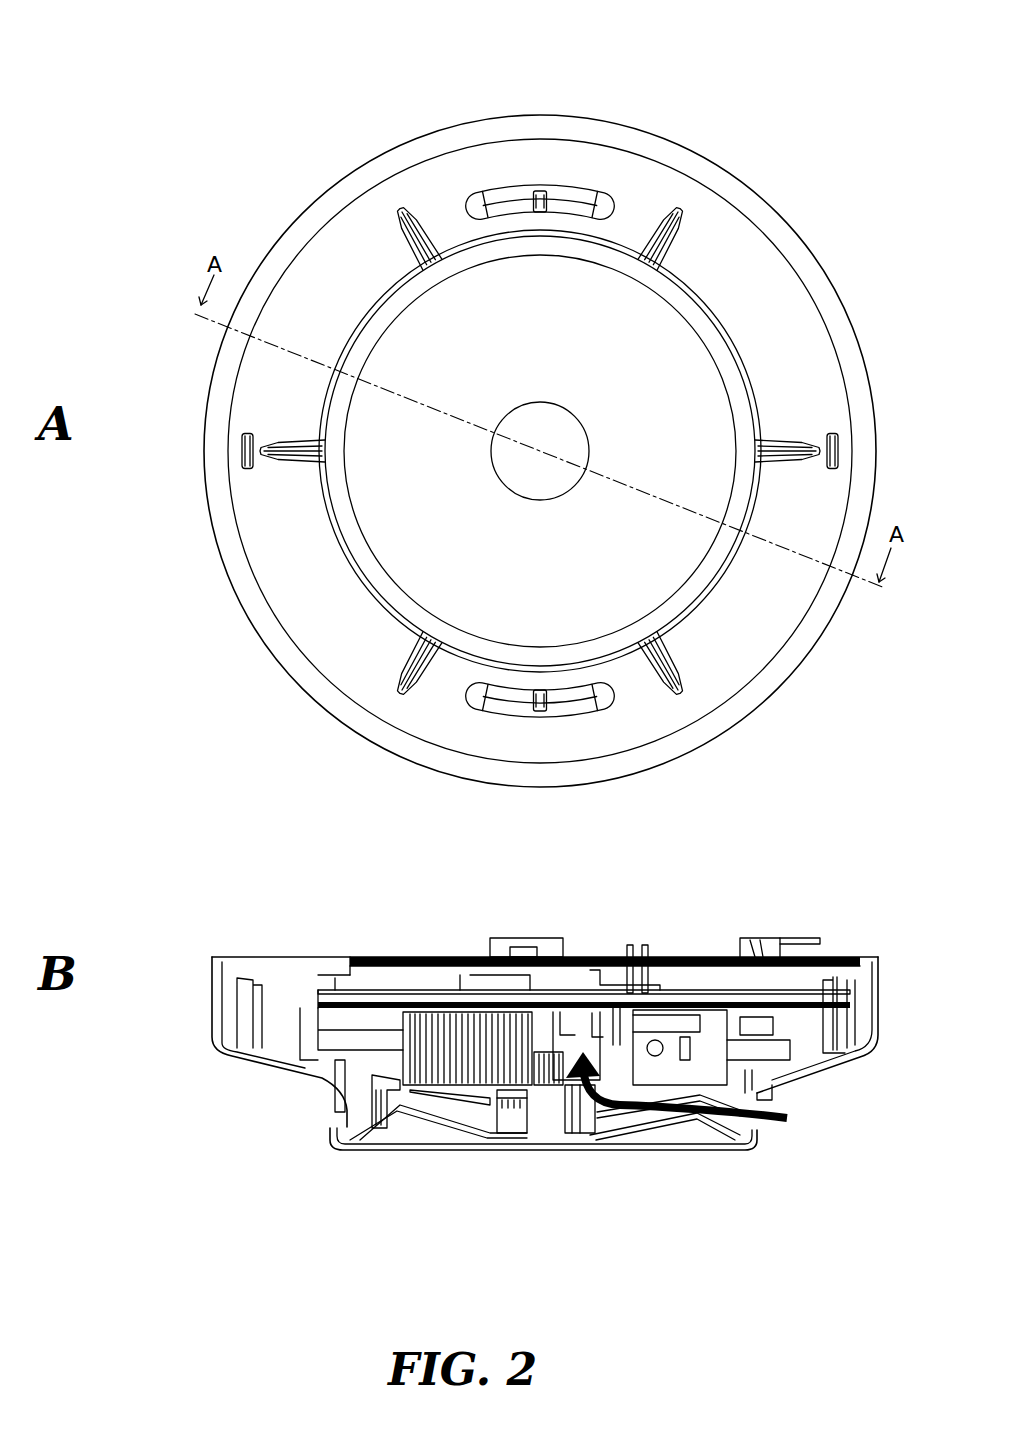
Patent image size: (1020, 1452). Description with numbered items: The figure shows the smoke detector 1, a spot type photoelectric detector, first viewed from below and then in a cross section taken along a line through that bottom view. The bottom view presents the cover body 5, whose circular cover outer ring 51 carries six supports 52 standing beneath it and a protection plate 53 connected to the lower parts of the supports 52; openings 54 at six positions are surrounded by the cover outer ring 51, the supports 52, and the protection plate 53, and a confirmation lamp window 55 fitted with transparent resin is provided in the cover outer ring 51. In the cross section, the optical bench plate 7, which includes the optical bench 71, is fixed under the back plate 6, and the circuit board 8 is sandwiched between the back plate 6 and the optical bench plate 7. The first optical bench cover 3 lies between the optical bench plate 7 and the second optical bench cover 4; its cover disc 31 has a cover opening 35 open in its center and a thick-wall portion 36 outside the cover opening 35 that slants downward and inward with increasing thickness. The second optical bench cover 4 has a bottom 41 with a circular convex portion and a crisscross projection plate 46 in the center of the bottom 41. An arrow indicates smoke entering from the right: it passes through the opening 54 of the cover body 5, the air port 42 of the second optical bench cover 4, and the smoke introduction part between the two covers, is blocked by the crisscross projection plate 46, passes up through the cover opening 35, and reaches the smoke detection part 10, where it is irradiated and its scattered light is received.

In FIG. 2A, the smoke detector 1 is at (853, 145).
In FIG. 2B, the smoke detector 1 is at (879, 915).
In FIG. 2B, the first optical bench cover 3 is at (329, 1101).
In FIG. 2B, the cover disc 31 is at (384, 1088).
In FIG. 2B, the second optical bench cover 4 is at (543, 1146).
In FIG. 2B, the bottom 41 is at (420, 1118).
In FIG. 2B, the cover body 5 is at (210, 987).
In FIG. 2B, the back plate 6 is at (370, 962).
In FIG. 2B, the optical bench plate 7 is at (296, 1060).
In FIG. 2B, the optical bench 71 is at (402, 1030).
In FIG. 2B, the circuit board 8 is at (447, 990).
In FIG. 2B, the smoke detection part 10 is at (560, 1048).
In FIG. 2B, the cover opening 35 is at (557, 1084).
In FIG. 2B, the thick-wall portion 36 is at (473, 1092).
In FIG. 2B, the air port 42 is at (740, 1122).
In FIG. 2B, the crisscross projection plate 46 is at (592, 1135).
In FIG. 2A, the cover outer ring 51 is at (323, 285).
In FIG. 2A, the supports 52 is at (425, 222).
In FIG. 2A, the protection plate 53 is at (428, 512).
In FIG. 2B, the openings 54 is at (760, 1098).
In FIG. 2A, the confirmation lamp window 55 is at (545, 190).